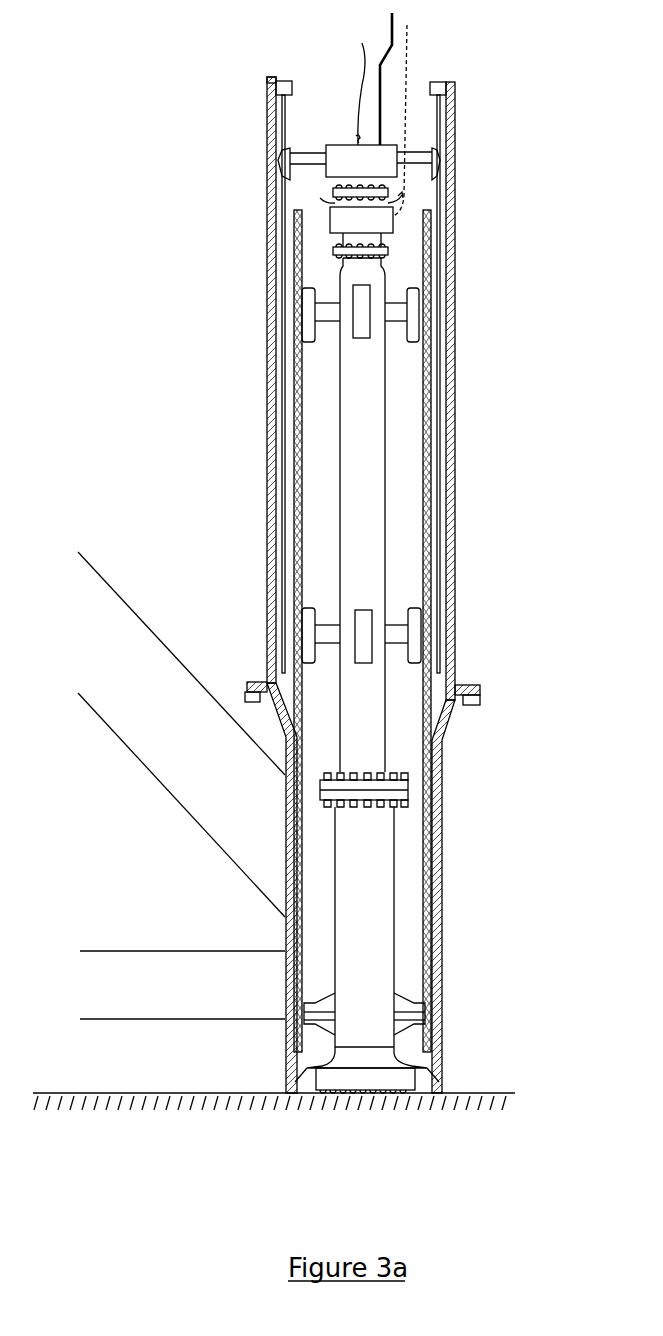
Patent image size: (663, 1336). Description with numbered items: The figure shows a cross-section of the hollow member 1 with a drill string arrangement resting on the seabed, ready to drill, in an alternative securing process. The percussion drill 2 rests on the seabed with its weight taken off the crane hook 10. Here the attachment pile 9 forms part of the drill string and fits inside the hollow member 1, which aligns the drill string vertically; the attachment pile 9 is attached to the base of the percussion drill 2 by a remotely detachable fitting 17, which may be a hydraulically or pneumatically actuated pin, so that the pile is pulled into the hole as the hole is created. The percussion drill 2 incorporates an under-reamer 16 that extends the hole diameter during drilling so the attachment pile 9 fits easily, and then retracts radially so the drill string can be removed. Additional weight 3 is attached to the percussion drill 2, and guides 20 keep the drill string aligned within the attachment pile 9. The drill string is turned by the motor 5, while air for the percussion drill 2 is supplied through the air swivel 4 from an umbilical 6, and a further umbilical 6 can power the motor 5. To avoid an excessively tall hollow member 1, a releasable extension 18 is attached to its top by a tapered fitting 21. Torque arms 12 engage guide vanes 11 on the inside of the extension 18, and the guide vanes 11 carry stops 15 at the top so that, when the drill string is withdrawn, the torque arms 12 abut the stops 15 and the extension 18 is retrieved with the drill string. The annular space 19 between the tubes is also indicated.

The hollow member 1 is at (437, 760).
The percussion drill 2 is at (380, 932).
The additional weight 3 is at (362, 533).
The air swivel 4 is at (393, 226).
The motor 5 is at (375, 155).
The umbilical 6 is at (392, 38).
The attachment pile 9 is at (427, 388).
The crane hook 10 is at (358, 138).
The guide vanes 11 is at (440, 312).
The torque arms 12 is at (440, 163).
The stops 15 is at (267, 83).
The under-reamer 16 is at (418, 1083).
The remotely detachable fitting 17 is at (428, 1010).
The releasable extension 18 is at (268, 352).
The annular space 19 is at (268, 437).
The guides 20 is at (300, 297).
The tapered fitting 21 is at (478, 700).